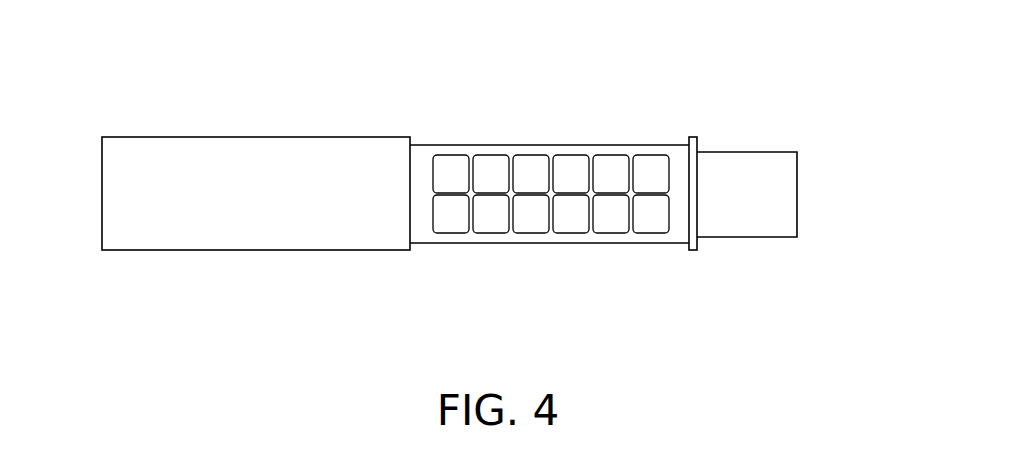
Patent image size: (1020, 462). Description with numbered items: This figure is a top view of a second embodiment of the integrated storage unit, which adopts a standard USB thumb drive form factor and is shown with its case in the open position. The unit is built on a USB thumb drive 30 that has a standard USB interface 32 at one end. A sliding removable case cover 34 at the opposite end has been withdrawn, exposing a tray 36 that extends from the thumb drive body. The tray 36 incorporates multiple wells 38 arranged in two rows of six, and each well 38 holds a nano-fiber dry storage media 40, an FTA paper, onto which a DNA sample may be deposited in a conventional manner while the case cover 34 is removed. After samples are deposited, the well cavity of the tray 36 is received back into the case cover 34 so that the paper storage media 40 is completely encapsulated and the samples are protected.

The USB thumb drive 30 is at (462, 225).
The standard USB interface 32 is at (733, 212).
The sliding removable case cover 34 is at (245, 235).
The tray 36 is at (437, 145).
The wells 38 is at (535, 198).
The nano-fiber dry storage media 40 is at (529, 170).